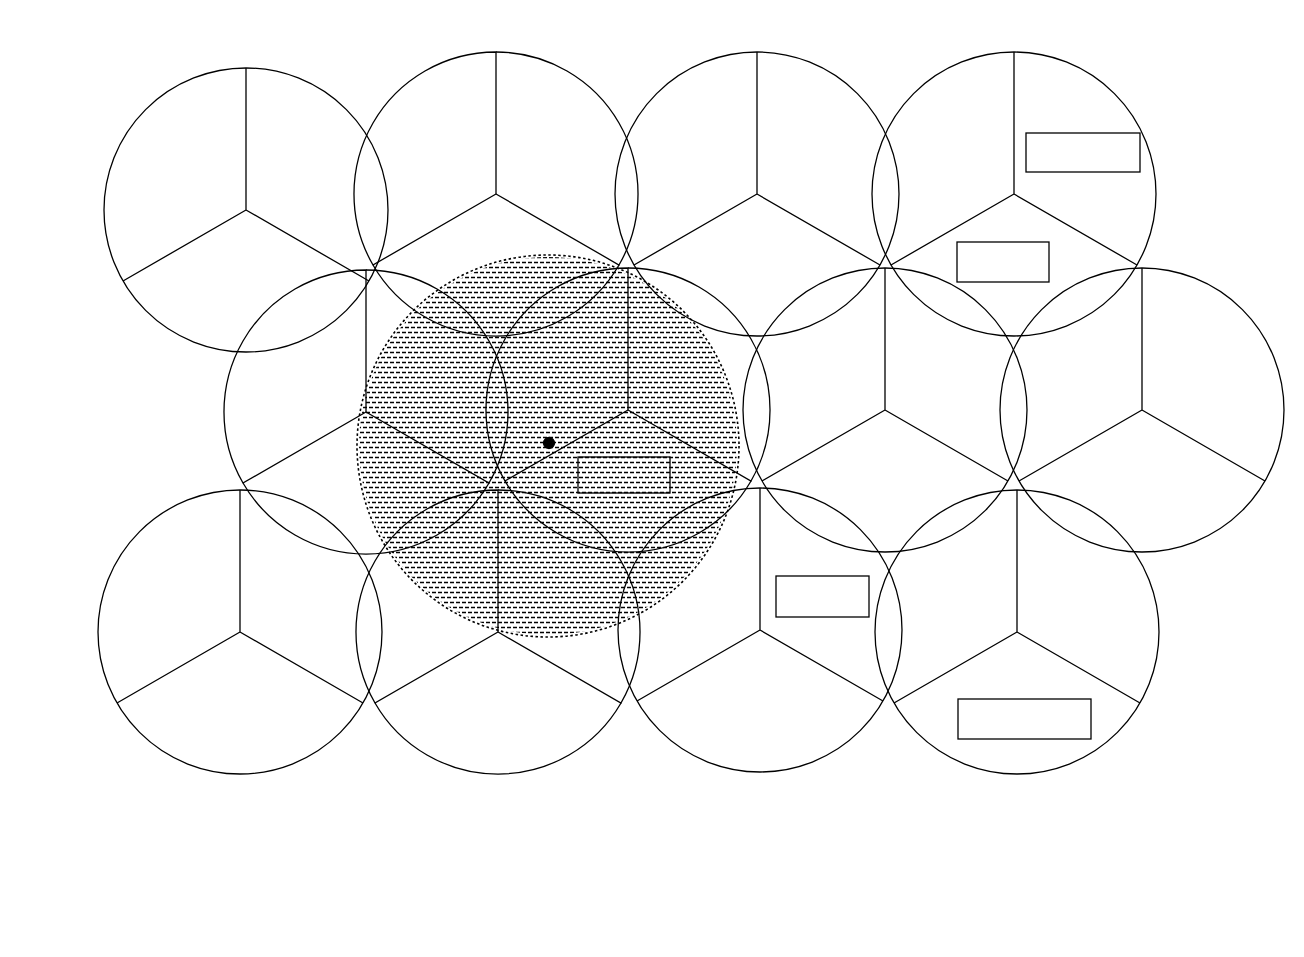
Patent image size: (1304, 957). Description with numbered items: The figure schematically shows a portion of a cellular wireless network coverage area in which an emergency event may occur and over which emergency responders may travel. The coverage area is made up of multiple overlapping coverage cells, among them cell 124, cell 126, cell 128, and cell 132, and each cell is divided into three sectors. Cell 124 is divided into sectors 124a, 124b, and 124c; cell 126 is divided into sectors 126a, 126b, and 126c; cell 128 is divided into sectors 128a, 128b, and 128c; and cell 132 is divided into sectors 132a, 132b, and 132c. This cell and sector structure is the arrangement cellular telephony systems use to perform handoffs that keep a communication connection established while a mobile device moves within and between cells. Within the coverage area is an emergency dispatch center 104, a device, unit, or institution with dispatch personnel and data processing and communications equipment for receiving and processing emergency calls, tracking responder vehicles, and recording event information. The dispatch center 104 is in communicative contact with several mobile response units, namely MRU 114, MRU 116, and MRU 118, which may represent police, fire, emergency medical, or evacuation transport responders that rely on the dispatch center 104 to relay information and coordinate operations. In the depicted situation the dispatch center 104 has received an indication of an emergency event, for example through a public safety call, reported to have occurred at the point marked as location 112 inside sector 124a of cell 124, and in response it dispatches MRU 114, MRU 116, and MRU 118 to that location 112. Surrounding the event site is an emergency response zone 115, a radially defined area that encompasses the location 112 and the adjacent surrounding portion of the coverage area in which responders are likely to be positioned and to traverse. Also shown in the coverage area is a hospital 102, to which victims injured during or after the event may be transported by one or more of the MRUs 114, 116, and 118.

The hospital 102 is at (1024, 698).
The emergency dispatch center 104 is at (1046, 133).
The emergency event location 112 is at (547, 435).
The mobile response unit 114 is at (623, 457).
The emergency response zone 115 is at (493, 263).
The mobile response unit 116 is at (997, 242).
The mobile response unit 118 is at (788, 576).
The cell 124 is at (653, 410).
The sector 124a is at (591, 373).
The sector 124b is at (690, 396).
The sector 124c is at (640, 521).
The cell 126 is at (522, 632).
The sector 126a is at (445, 621).
The sector 126b is at (573, 611).
The sector 126c is at (532, 714).
The cell 128 is at (342, 412).
The sector 128a is at (328, 395).
The sector 128b is at (453, 401).
The sector 128c is at (357, 493).
The cell 132 is at (503, 191).
The sector 132a is at (460, 173).
The sector 132b is at (575, 181).
The sector 132c is at (490, 255).